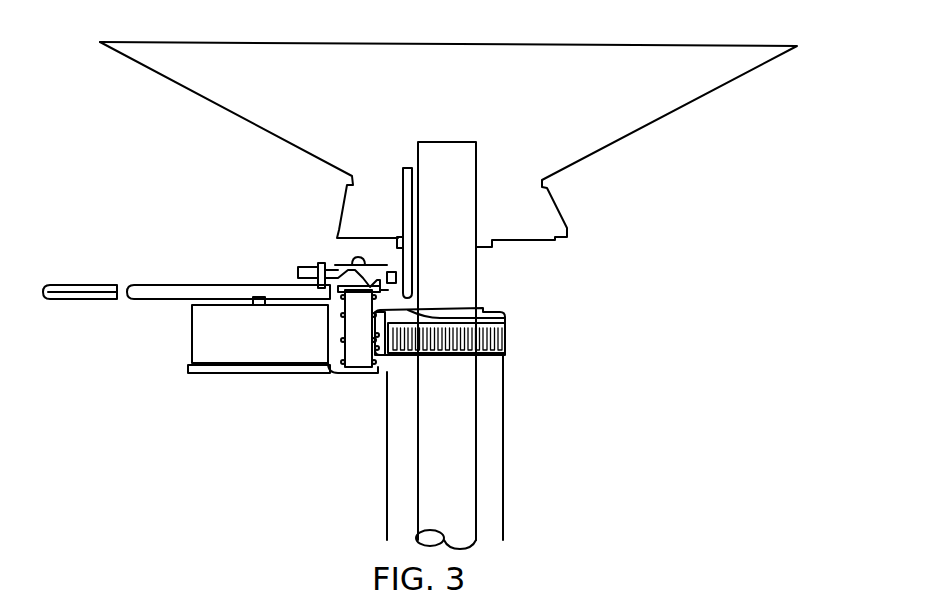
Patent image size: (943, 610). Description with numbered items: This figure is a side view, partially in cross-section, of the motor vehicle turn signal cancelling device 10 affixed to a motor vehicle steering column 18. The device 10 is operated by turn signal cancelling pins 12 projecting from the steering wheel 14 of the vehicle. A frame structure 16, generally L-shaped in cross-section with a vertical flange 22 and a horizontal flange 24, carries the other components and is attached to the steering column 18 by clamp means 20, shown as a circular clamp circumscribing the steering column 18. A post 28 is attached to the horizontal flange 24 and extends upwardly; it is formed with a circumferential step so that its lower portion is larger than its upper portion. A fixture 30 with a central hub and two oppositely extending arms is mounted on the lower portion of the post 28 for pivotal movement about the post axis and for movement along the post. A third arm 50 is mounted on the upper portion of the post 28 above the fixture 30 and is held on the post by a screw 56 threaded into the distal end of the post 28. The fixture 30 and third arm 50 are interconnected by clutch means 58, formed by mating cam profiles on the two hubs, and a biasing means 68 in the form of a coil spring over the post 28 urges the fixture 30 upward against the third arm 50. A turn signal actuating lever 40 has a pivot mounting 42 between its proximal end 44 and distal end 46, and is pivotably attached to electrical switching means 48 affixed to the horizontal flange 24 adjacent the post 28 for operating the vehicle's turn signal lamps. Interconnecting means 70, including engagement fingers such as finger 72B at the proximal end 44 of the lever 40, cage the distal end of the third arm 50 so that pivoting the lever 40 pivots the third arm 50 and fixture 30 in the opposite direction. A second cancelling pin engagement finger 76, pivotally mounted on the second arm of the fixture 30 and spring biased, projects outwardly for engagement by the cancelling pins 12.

The turn signal cancelling device 10 is at (168, 146).
The turn signal cancelling pins 12 is at (411, 257).
The steering wheel 14 is at (703, 98).
The frame structure 16 is at (304, 392).
The steering column 18 is at (505, 426).
The clamp means 20 is at (507, 334).
The vertical flange 22 is at (387, 356).
The horizontal flange 24 is at (248, 375).
The post 28 is at (355, 340).
The fixture 30 is at (418, 296).
The turn signal actuating lever 40 is at (138, 285).
The pivot mounting 42 is at (260, 295).
The proximal end 44 is at (257, 297).
The distal end 46 is at (50, 285).
The electrical switching means 48 is at (212, 352).
The third arm 50 is at (357, 260).
The screw 56 is at (372, 240).
The clutch means 58 is at (394, 252).
The biasing means 68 is at (343, 340).
The interconnecting means 70 is at (317, 244).
The third arm engagement finger 72B is at (302, 267).
The second cancelling pin engagement finger 76 is at (413, 283).